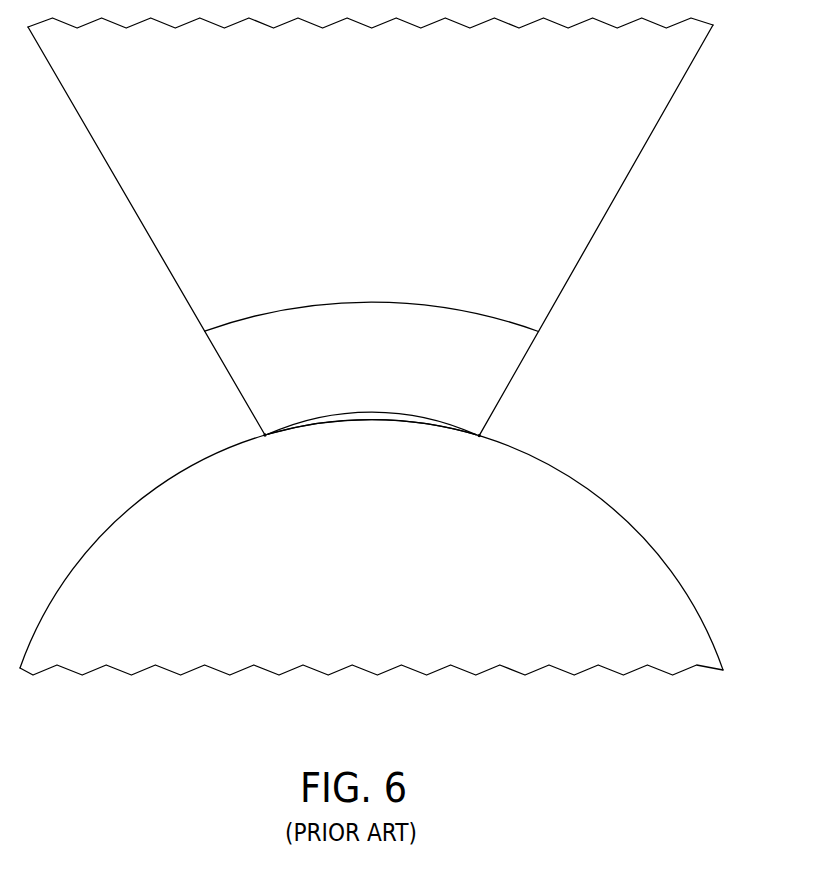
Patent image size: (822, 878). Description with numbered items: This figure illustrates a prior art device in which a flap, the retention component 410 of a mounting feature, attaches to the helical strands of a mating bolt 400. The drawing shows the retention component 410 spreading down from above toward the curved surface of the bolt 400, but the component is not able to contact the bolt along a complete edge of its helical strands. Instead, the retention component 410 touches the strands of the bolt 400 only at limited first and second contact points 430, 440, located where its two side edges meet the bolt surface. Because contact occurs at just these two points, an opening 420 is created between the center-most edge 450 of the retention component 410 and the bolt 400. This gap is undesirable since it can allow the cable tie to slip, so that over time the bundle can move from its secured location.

The bolt 400 is at (663, 542).
The retention component 410 is at (579, 382).
The opening 420 is at (392, 418).
The first contact point 430 is at (263, 435).
The second contact point 440 is at (482, 435).
The center-most edge 450 is at (345, 418).